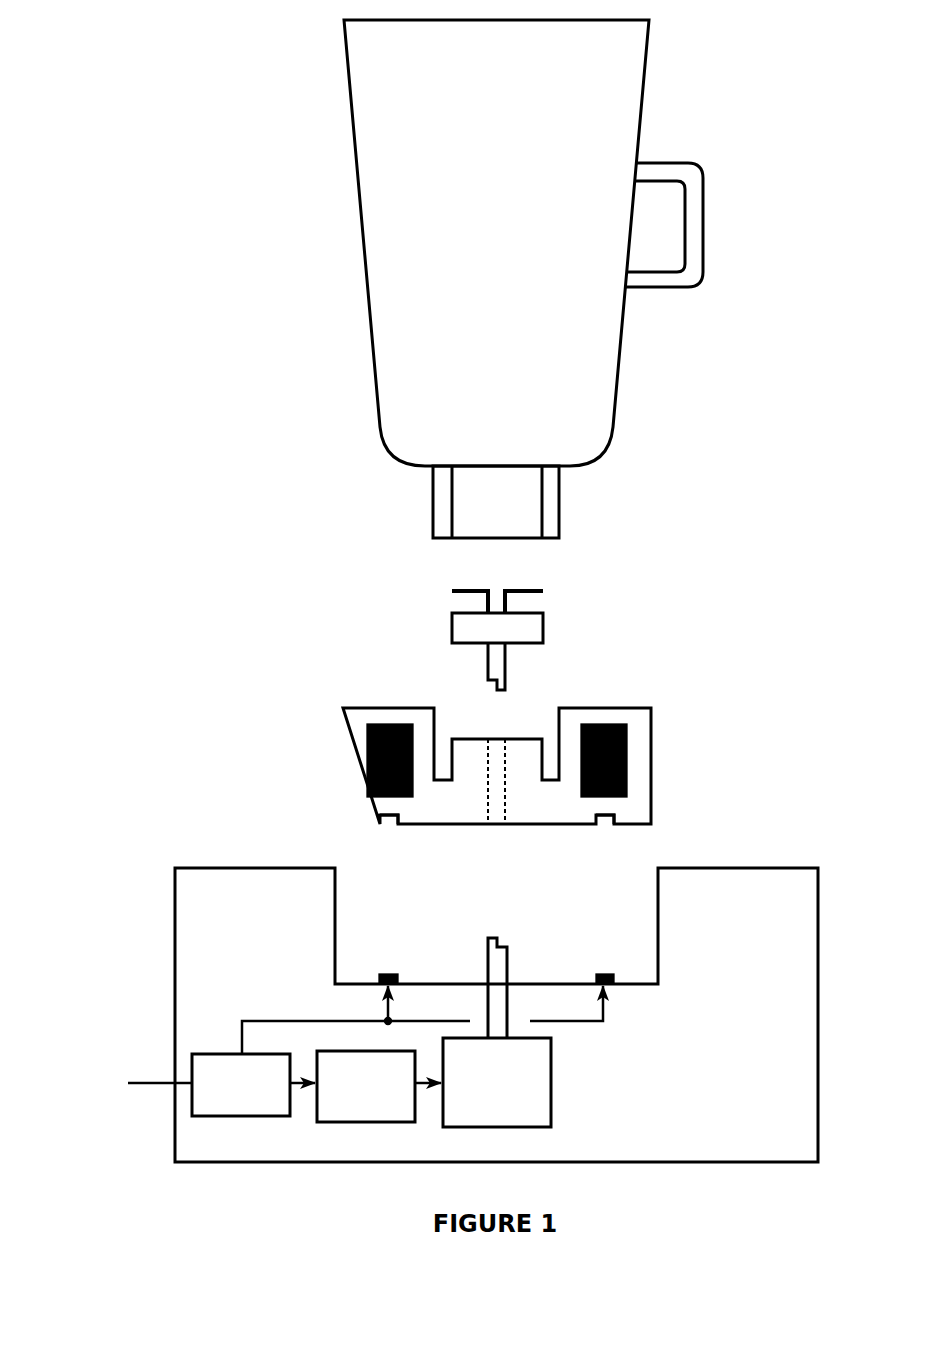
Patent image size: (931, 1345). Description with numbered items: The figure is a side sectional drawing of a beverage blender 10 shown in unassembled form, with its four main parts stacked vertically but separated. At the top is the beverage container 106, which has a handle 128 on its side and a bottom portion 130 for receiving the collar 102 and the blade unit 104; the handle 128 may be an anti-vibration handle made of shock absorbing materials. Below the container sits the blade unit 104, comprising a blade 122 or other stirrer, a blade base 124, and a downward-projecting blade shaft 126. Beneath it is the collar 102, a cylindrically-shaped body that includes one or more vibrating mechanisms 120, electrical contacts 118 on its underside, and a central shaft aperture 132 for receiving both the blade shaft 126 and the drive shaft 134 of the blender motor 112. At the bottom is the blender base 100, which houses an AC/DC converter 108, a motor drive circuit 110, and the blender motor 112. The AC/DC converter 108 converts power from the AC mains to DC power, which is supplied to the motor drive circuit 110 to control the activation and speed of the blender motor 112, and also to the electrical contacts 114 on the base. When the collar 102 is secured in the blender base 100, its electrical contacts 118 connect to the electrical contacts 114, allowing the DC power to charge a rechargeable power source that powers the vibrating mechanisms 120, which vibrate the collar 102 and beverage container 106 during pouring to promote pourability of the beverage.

The beverage blender 10 is at (126, 421).
The blender base 100 is at (150, 983).
The collar 102 is at (318, 702).
The blade unit 104 is at (411, 617).
The beverage container 106 is at (351, 272).
The AC/DC converter 108 is at (241, 1122).
The motor drive circuit 110 is at (362, 1128).
The blender motor 112 is at (497, 1133).
The electrical contacts 114 is at (390, 960).
The electrical contacts 118 is at (388, 826).
The vibrating mechanisms 120 is at (365, 761).
The blade 122 is at (553, 588).
The blade base 124 is at (553, 628).
The blade shaft 126 is at (512, 673).
The handle 128 is at (708, 228).
The bottom portion 130 is at (567, 508).
The shaft aperture 132 is at (496, 733).
The drive shaft 134 is at (505, 936).